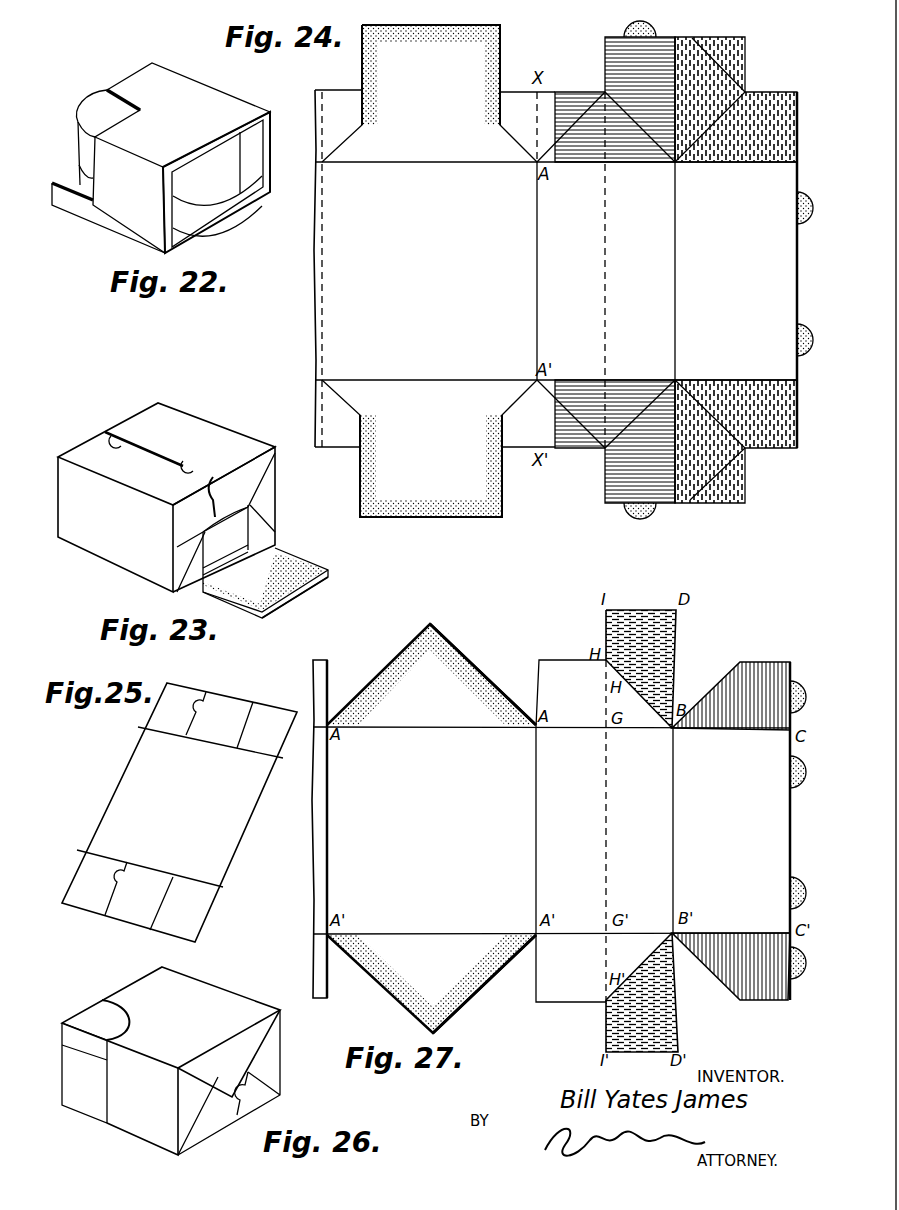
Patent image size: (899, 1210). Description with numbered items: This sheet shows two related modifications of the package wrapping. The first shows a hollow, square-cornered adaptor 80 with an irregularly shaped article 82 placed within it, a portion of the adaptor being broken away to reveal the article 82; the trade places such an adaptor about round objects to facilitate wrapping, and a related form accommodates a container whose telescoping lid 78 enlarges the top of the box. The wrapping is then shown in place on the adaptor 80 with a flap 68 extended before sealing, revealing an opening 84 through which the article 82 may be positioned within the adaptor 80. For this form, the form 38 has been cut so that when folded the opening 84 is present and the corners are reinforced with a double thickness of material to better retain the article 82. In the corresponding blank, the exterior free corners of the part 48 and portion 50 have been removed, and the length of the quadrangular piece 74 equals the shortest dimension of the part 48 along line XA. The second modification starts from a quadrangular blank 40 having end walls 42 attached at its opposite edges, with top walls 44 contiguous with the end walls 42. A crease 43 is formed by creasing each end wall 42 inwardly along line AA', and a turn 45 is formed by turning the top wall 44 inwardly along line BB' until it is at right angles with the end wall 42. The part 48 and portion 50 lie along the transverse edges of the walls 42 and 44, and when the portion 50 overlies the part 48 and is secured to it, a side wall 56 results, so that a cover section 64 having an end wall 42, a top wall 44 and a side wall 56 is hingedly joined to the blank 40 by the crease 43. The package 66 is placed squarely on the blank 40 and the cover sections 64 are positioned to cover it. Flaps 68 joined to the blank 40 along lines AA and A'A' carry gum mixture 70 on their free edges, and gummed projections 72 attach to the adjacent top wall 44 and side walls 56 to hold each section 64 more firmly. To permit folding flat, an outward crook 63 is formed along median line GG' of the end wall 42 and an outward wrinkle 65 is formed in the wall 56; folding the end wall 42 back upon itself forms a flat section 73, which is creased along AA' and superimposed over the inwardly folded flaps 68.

In FIG. 24, the form 38 is at (555, 270).
In FIG. 24, the quadrangular blank 40 is at (468, 271).
In FIG. 25, the quadrangular blank 40 is at (179, 808).
In FIG. 26, the quadrangular blank 40 is at (171, 1017).
In FIG. 27, the quadrangular blank 40 is at (551, 829).
In FIG. 27, the end wall 42 is at (567, 827).
In FIG. 27, the crease 43 is at (537, 898).
In FIG. 27, the top wall 44 is at (731, 827).
In FIG. 27, the turn 45 is at (674, 880).
In FIG. 24, the part 48 is at (555, 123).
In FIG. 27, the part 48 is at (571, 693).
In FIG. 24, the portion 50 is at (790, 134).
In FIG. 27, the portion 50 is at (780, 670).
In FIG. 26, the side wall 56 is at (191, 1112).
In FIG. 27, the outward crook 63 is at (606, 881).
In FIG. 23, the cover section 64 is at (232, 440).
In FIG. 26, the cover section 64 is at (143, 1122).
In FIG. 27, the outward wrinkle 65 is at (610, 702).
In FIG. 26, the package 66 is at (88, 1095).
In FIG. 23, the flap 68 is at (285, 573).
In FIG. 24, the flap 68 is at (421, 463).
In FIG. 26, the flap 68 is at (229, 1053).
In FIG. 27, the flap 68 is at (431, 828).
In FIG. 23, the gum mixture 70 is at (325, 580).
In FIG. 24, the gum mixture 70 is at (500, 30).
In FIG. 27, the gum mixture 70 is at (478, 682).
In FIG. 23, the projection 72 is at (122, 447).
In FIG. 24, the projection 72 is at (654, 32).
In FIG. 26, the projection 72 is at (262, 1100).
In FIG. 27, the projection 72 is at (802, 888).
In FIG. 25, the flat section 73 is at (250, 836).
In FIG. 24, the quadrangular piece 74 is at (547, 106).
In FIG. 26, the telescoping lid 78 is at (73, 1022).
In FIG. 22, the adaptor 80 is at (161, 158).
In FIG. 22, the irregularly shaped article 82 is at (169, 163).
In FIG. 23, the opening 84 is at (240, 532).